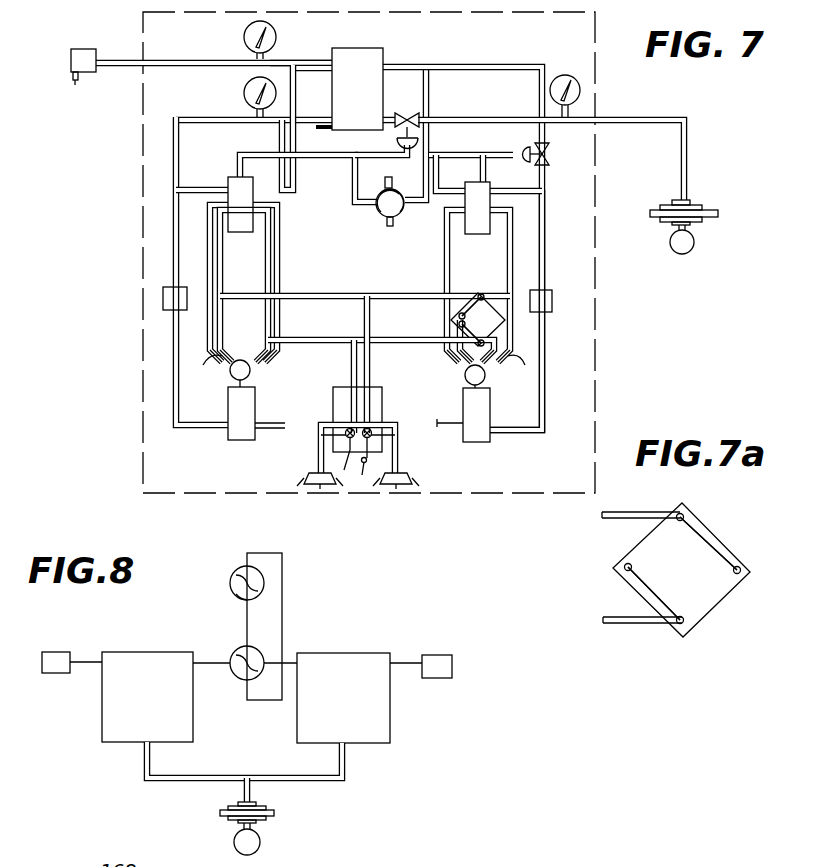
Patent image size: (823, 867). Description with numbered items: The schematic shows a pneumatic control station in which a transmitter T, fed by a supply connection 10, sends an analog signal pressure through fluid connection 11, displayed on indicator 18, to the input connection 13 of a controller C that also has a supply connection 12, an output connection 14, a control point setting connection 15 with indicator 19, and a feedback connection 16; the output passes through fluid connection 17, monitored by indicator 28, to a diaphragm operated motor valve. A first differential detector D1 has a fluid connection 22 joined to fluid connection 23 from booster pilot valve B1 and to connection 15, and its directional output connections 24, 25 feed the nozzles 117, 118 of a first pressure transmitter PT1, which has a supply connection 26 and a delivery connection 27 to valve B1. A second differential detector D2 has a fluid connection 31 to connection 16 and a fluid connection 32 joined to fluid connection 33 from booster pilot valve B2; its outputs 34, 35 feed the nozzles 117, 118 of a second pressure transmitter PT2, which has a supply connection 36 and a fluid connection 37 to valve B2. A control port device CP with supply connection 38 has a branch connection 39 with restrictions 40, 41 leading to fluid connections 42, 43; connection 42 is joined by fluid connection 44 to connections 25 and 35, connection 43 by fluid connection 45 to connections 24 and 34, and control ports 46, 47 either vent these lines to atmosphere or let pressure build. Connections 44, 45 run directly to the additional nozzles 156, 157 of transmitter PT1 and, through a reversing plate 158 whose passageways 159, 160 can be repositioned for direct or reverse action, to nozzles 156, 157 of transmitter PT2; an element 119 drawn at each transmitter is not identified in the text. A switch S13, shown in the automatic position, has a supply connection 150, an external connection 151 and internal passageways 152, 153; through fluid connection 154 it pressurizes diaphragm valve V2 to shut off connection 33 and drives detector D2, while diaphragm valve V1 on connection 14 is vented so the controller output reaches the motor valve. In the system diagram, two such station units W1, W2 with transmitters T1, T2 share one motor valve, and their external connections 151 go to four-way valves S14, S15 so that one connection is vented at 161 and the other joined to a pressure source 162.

In FIG. 7, the supply connection 10 is at (68, 79).
In FIG. 7, the transmitter T is at (88, 48).
In FIG. 7, the fluid connection 11 is at (181, 58).
In FIG. 8, the fluid connection 11 is at (85, 660).
In FIG. 7, the input connection 13 is at (284, 66).
In FIG. 7, the indicator 18 is at (276, 37).
In FIG. 7, the indicator 19 is at (244, 95).
In FIG. 7, the indicator 28 is at (566, 76).
In FIG. 7, the controller C is at (348, 50).
In FIG. 7, the supply connection 12 is at (339, 114).
In FIG. 7, the fluid connection 14 is at (372, 118).
In FIG. 7, the fluid connection 15 is at (302, 118).
In FIG. 7, the fluid connection 16 is at (410, 63).
In FIG. 7, the fluid connection 17 is at (662, 112).
In FIG. 8, the fluid connection 17 is at (152, 770).
In FIG. 7, the diaphragm operated valve V1 is at (407, 113).
In FIG. 7, the diaphragm operated valve V2 is at (549, 153).
In FIG. 7, the fluid connection 22 is at (196, 168).
In FIG. 7, the fluid connection 23 is at (174, 241).
In FIG. 7, the directional output connection 24 is at (208, 215).
In FIG. 7, the directional output connection 25 is at (281, 243).
In FIG. 7, the pressure fluid supply connection 26 is at (263, 441).
In FIG. 7, the fluid delivery connection 27 is at (176, 348).
In FIG. 7, the fluid connection 31 is at (448, 190).
In FIG. 7, the fluid connection 32 is at (527, 159).
In FIG. 7, the fluid connection 33 is at (547, 211).
In FIG. 7, the directional output connection 34 is at (512, 232).
In FIG. 7, the directional output connection 35 is at (447, 262).
In FIG. 7, the pressure fluid supply connection 36 is at (443, 428).
In FIG. 7, the fluid connection 37 is at (546, 330).
In FIG. 7, the first differential detector D1 is at (240, 204).
In FIG. 7, the second differential detector D2 is at (477, 208).
In FIG. 7, the booster pilot valve B1 is at (163, 299).
In FIG. 7, the booster pilot valve B2 is at (552, 298).
In FIG. 7, the switch S13 is at (377, 212).
In FIG. 7, the supply connection 150 is at (384, 172).
In FIG. 7, the external fluid connection 151 is at (374, 235).
In FIG. 8, the external fluid connection 151 is at (198, 662).
In FIG. 7, the internal fluid passageway 152 is at (397, 191).
In FIG. 7, the valve passageway 153 is at (377, 192).
In FIG. 7, the fluid connection 154 is at (421, 210).
In FIG. 7, the fluid connection 45 is at (352, 280).
In FIG. 7, the fluid connection 44 is at (332, 322).
In FIG. 7, the fluid connection 43 is at (370, 355).
In FIG. 7, the fluid connection 42 is at (348, 365).
In FIG. 7, the reversing plate 158 is at (493, 298).
In FIG. 7A, the reversing plate 158 is at (720, 540).
In FIG. 7, the passageway 159 is at (460, 312).
In FIG. 7A, the passageway 159 is at (727, 560).
In FIG. 7, the passageway 160 is at (460, 330).
In FIG. 7A, the passageway 160 is at (640, 583).
In FIG. 7, the float 119 is at (241, 358).
In FIG. 7, the nozzle 156 is at (273, 353).
In FIG. 7, the nozzle 157 is at (226, 364).
In FIG. 7, the nozzle 118 is at (262, 375).
In FIG. 7, the nozzle 117 is at (505, 388).
In FIG. 7, the first pressure transmitter PT1 is at (256, 406).
In FIG. 7, the second pressure transmitter PT2 is at (487, 432).
In FIG. 7, the control port device CP is at (377, 410).
In FIG. 7, the restriction 40 is at (345, 436).
In FIG. 7, the restriction 41 is at (372, 436).
In FIG. 7, the branch fluid connection 39 is at (349, 466).
In FIG. 7, the pressure fluid supply connection 38 is at (372, 464).
In FIG. 7, the control port 46 is at (302, 480).
In FIG. 7, the control port 47 is at (413, 478).
In FIG. 8, the fluid pressure transmitter T1 is at (52, 651).
In FIG. 8, the fluid pressure transmitter T2 is at (444, 660).
In FIG. 8, the station unit W1 is at (147, 697).
In FIG. 8, the station unit W2 is at (343, 698).
In FIG. 8, the four way valve S14 is at (236, 651).
In FIG. 8, the four way valve S15 is at (236, 573).
In FIG. 8, the vent 161 is at (268, 588).
In FIG. 8, the source of fluid under pressure 162 is at (230, 590).